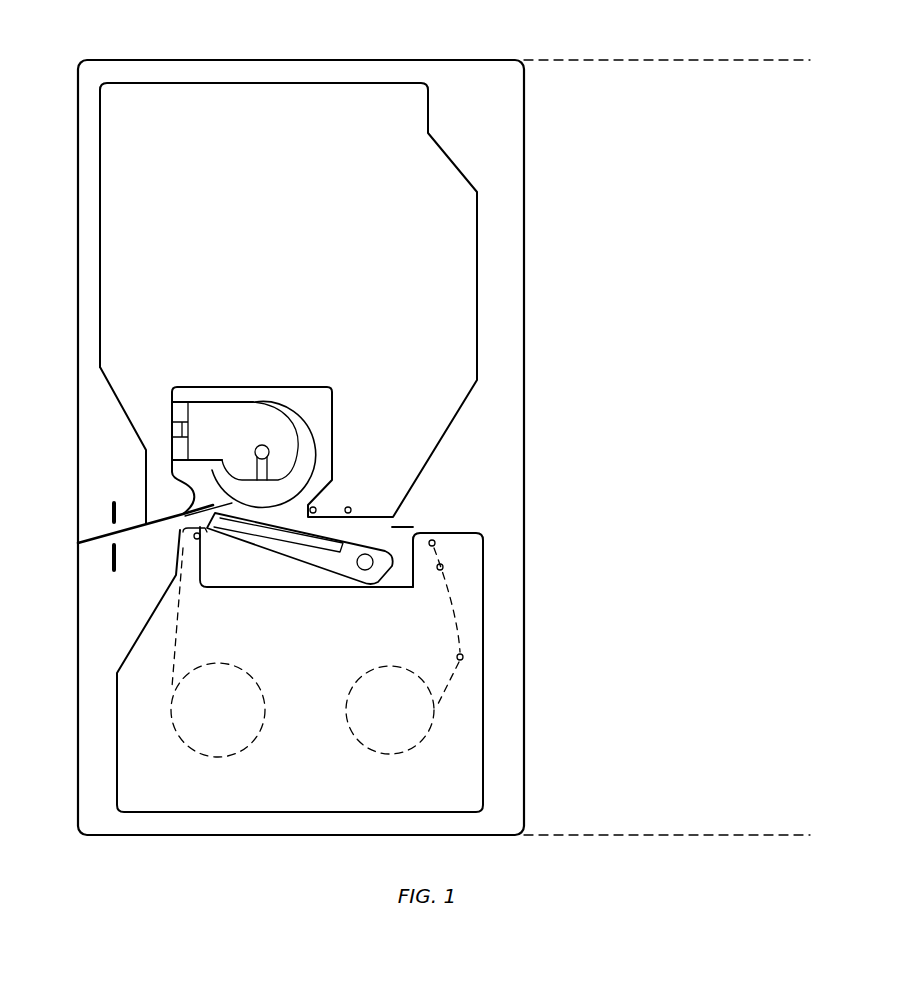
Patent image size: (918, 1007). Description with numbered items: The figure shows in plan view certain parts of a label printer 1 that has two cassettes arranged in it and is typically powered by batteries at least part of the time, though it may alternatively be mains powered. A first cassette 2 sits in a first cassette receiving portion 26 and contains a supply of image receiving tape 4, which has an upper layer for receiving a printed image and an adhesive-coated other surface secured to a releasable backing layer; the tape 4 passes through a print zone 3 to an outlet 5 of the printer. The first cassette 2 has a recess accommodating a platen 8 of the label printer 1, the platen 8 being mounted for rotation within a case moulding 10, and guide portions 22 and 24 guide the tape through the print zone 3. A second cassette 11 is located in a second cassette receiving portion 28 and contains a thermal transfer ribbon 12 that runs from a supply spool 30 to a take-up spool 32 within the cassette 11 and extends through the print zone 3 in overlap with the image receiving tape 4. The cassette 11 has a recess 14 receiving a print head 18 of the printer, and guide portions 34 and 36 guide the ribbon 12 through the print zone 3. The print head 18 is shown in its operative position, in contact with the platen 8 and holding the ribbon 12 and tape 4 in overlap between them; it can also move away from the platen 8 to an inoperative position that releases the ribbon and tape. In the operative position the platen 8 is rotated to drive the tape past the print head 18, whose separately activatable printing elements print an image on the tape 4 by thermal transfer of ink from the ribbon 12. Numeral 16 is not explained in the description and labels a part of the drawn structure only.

The label printer 1 is at (789, 57).
The first cassette 2 is at (462, 210).
The print zone 3 is at (213, 494).
The image receiving tape 4 is at (96, 541).
The outlet 5 is at (100, 549).
The platen 8 is at (293, 410).
The case moulding 10 is at (283, 448).
The second cassette 11 is at (472, 713).
The thermal transfer ribbon 12 is at (393, 531).
The recess 14 is at (412, 588).
The roller housing 16 is at (332, 400).
The print head 18 is at (302, 563).
The guide portion 22 is at (314, 506).
The guide portion 24 is at (183, 515).
The first cassette receiving portion 26 is at (513, 118).
The second cassette receiving portion 28 is at (512, 578).
The supply spool 30 is at (380, 666).
The take-up spool 32 is at (233, 660).
The guide portion 34 is at (422, 533).
The guide portion 36 is at (215, 508).